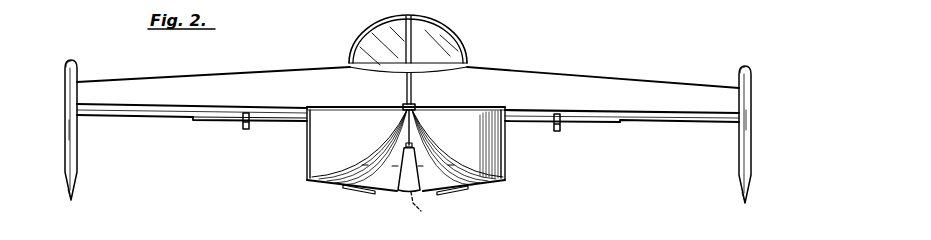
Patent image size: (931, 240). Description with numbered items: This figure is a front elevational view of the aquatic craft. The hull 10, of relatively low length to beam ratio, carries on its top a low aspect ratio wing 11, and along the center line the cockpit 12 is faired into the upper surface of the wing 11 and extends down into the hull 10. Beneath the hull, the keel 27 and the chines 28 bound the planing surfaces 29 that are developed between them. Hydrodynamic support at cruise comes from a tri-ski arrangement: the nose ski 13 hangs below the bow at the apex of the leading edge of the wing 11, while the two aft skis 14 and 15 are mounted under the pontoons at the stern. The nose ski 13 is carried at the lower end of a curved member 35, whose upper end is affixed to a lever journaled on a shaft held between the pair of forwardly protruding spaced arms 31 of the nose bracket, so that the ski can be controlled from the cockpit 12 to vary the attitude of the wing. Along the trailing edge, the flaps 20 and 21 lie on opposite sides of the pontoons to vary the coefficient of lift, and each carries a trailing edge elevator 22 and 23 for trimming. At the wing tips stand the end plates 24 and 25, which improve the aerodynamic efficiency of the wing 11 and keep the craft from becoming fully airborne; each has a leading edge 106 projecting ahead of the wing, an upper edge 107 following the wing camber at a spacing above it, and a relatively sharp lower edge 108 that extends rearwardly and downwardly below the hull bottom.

The hull 10 is at (513, 153).
The wing 11 is at (592, 70).
The cockpit 12 is at (442, 27).
The nose ski 13 is at (405, 191).
The aft ski 14 is at (470, 190).
The aft ski 15 is at (345, 190).
The trailing edge flap 20 is at (648, 122).
The trailing edge flap 21 is at (147, 118).
The trailing edge elevator 22 is at (585, 123).
The trailing edge elevator 23 is at (207, 118).
The end plate 24 is at (740, 152).
The end plate 25 is at (77, 156).
The keel 27 is at (426, 206).
The chines 28 is at (378, 150).
The planing surfaces 29 is at (408, 166).
The spaced arms 31 is at (421, 93).
The curved member 35 is at (414, 135).
The leading edge 106 is at (66, 129).
The upper edge 107 is at (68, 65).
The lower edge 108 is at (72, 193).